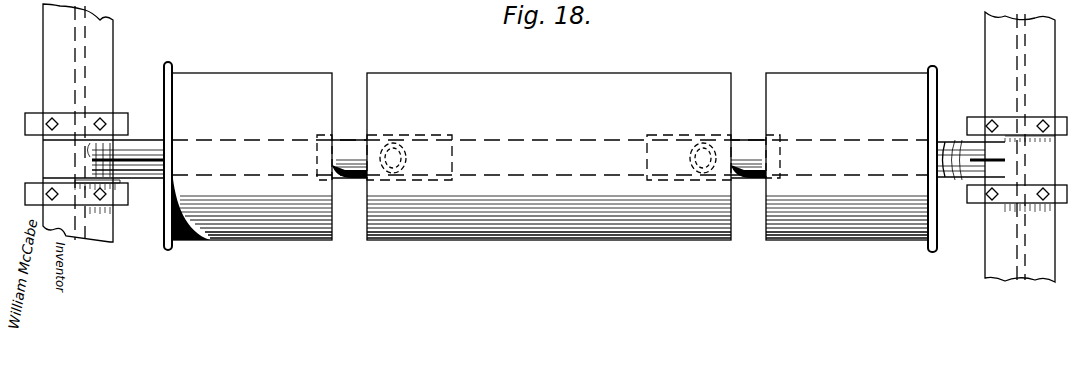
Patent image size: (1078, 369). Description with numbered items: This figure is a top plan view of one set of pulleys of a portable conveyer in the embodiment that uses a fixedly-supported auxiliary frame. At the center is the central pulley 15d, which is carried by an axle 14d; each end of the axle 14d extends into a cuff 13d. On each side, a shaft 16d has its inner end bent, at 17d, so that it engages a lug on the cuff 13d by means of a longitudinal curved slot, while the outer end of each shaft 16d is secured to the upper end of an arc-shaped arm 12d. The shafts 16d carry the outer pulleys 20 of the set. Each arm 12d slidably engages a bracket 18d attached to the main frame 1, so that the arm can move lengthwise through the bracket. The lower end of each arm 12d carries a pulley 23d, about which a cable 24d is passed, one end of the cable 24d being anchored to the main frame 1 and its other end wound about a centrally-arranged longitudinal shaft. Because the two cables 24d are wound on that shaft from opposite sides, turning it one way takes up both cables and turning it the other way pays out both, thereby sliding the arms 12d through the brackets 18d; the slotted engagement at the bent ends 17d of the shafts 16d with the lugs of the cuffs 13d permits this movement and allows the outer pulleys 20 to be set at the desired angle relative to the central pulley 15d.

The main frame 1 is at (98, 226).
The arc-shaped arm 12d is at (116, 156).
The cuff 13d is at (352, 181).
The axle 14d is at (582, 156).
The central pulley 15d is at (549, 156).
The shaft 16d is at (160, 183).
The bent inner end of shaft 17d is at (385, 143).
The bracket 18d is at (70, 143).
The end roll 20 is at (550, 157).
The pulley 23d is at (561, 9).
The cable 24d is at (540, 8).